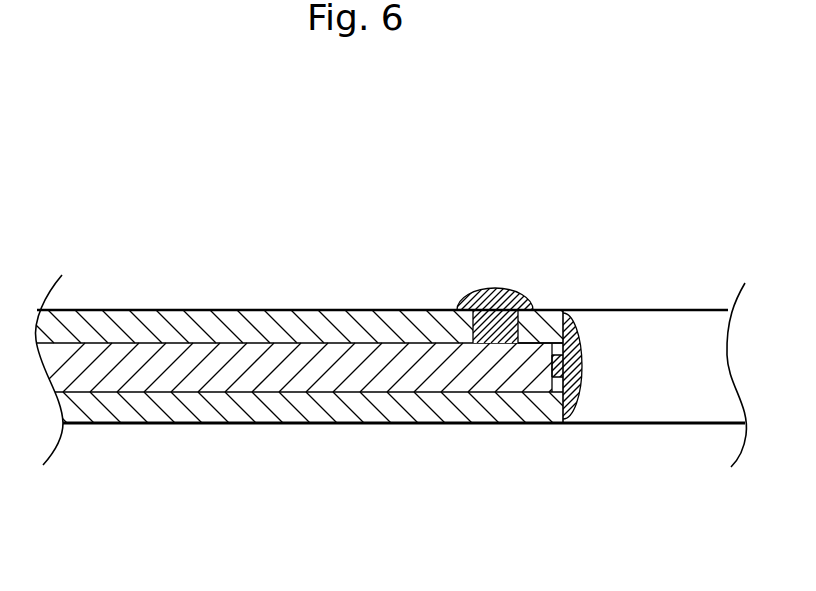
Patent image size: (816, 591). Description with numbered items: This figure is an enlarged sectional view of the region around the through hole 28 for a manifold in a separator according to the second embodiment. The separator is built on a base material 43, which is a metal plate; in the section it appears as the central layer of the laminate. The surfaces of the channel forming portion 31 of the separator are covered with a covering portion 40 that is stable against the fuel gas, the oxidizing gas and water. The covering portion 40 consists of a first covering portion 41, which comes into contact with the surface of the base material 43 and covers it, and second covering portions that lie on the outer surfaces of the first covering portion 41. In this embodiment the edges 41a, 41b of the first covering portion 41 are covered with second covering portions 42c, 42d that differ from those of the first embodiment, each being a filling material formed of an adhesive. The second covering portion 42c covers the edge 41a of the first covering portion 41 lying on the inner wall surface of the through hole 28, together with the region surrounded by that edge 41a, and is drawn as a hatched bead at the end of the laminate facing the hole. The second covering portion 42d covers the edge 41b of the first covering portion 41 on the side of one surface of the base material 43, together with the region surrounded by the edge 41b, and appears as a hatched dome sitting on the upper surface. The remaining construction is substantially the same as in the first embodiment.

The through hole 28 is at (672, 330).
The channel forming portion 31 is at (108, 308).
The covering portion 40 is at (292, 348).
The first covering portion 41 is at (205, 320).
The edge of first covering portion 41a is at (582, 345).
The edge of first covering portion 41b is at (505, 288).
The second covering portion 42c is at (582, 380).
The second covering portion 42d is at (490, 287).
The base material 43 is at (148, 358).